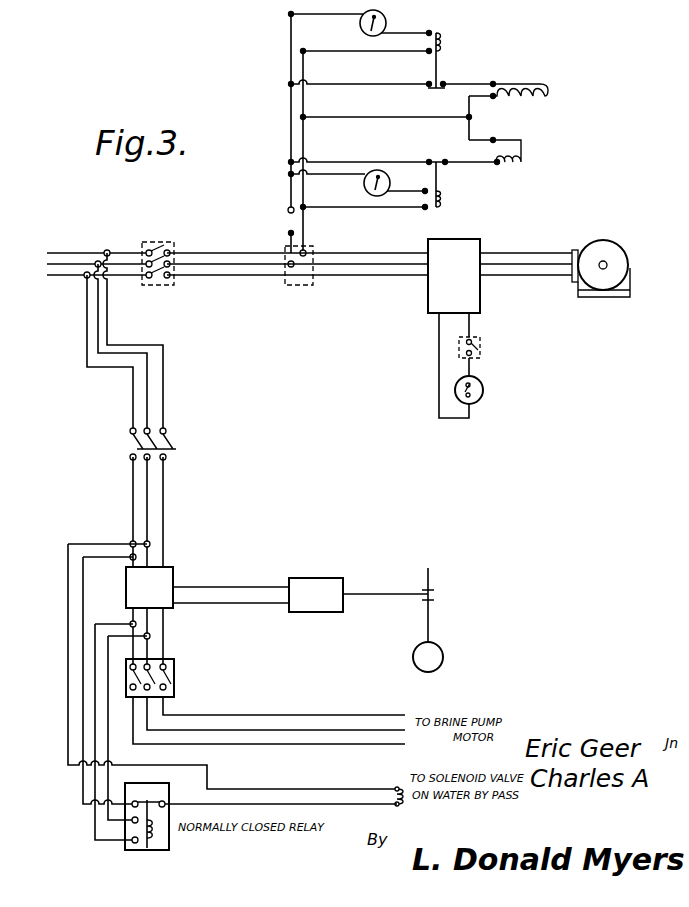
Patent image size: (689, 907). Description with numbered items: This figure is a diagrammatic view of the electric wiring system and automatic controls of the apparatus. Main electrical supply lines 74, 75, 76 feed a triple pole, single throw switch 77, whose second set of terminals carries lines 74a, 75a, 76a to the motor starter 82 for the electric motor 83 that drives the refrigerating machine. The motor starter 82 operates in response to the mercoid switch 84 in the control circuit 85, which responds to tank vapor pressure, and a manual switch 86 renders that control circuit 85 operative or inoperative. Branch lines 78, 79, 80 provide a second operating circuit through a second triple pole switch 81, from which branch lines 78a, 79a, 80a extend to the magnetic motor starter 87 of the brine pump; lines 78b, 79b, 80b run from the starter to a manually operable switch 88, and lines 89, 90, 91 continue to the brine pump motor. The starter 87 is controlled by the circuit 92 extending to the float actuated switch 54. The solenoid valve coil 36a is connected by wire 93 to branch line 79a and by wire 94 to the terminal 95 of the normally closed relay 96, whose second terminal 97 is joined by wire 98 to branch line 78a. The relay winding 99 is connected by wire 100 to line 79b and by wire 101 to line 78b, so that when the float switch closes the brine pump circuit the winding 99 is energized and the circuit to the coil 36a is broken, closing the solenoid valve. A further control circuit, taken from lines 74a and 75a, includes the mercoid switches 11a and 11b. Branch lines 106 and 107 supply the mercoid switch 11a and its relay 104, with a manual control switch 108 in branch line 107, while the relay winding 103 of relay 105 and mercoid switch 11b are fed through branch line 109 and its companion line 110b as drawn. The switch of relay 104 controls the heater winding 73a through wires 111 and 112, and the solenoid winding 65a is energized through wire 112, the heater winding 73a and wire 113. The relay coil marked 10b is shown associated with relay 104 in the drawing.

The mercoid switch 11a is at (386, 18).
The relay coil 10b is at (442, 50).
The relay 104 is at (433, 70).
The branch line 106 is at (305, 68).
The branch line 107 is at (289, 71).
The wire 111 is at (380, 90).
The wire 112 is at (384, 121).
The wire 113 is at (389, 161).
The branch line 109 is at (381, 209).
The heater winding 73a is at (545, 93).
The solenoid winding 65a is at (522, 160).
The relay 105 is at (440, 180).
The relay winding 103 is at (440, 199).
The mercoid switch 11b is at (363, 186).
The relay contacts 110b is at (330, 180).
The manual control switch 108 is at (289, 231).
The main electrical supply line 74 is at (80, 252).
The main electrical supply line 75 is at (48, 265).
The main electrical supply line 76 is at (64, 277).
The triple pole, single throw switch 77 is at (155, 243).
The line 74a is at (183, 252).
The line 75a is at (236, 262).
The line 76a is at (214, 277).
The branch line 78 is at (82, 370).
The branch line 79 is at (96, 353).
The branch line 80 is at (110, 334).
The second triple pole, single throw switch 81 is at (134, 448).
The branch line 78a is at (131, 530).
The branch line 79a is at (150, 486).
The branch line 80a is at (166, 517).
The motor starter 82 is at (463, 238).
The electric motor 83 is at (624, 250).
The mercoid switch 84 is at (478, 402).
The control circuit 85 is at (439, 364).
The manual switch 86 is at (482, 354).
The magnetic motor starter 87 is at (124, 577).
The float actuated switch 54 is at (310, 577).
The circuit 92 is at (246, 604).
The wire 93 is at (67, 639).
The wire 98 is at (84, 614).
The line 78b is at (131, 655).
The line 79b is at (150, 647).
The line 80b is at (166, 625).
The triple pole, single throw switch 88 is at (176, 682).
The line 89 is at (265, 748).
The line 90 is at (307, 733).
The line 91 is at (296, 713).
The solenoid valve coil 36a is at (398, 787).
The wire 94 is at (326, 806).
The relay terminal 95 is at (166, 806).
The normally closed relay 96 is at (147, 851).
The relay terminal 97 is at (130, 801).
The relay winding 99 is at (153, 838).
The wire 100 is at (110, 756).
The wire 101 is at (97, 844).